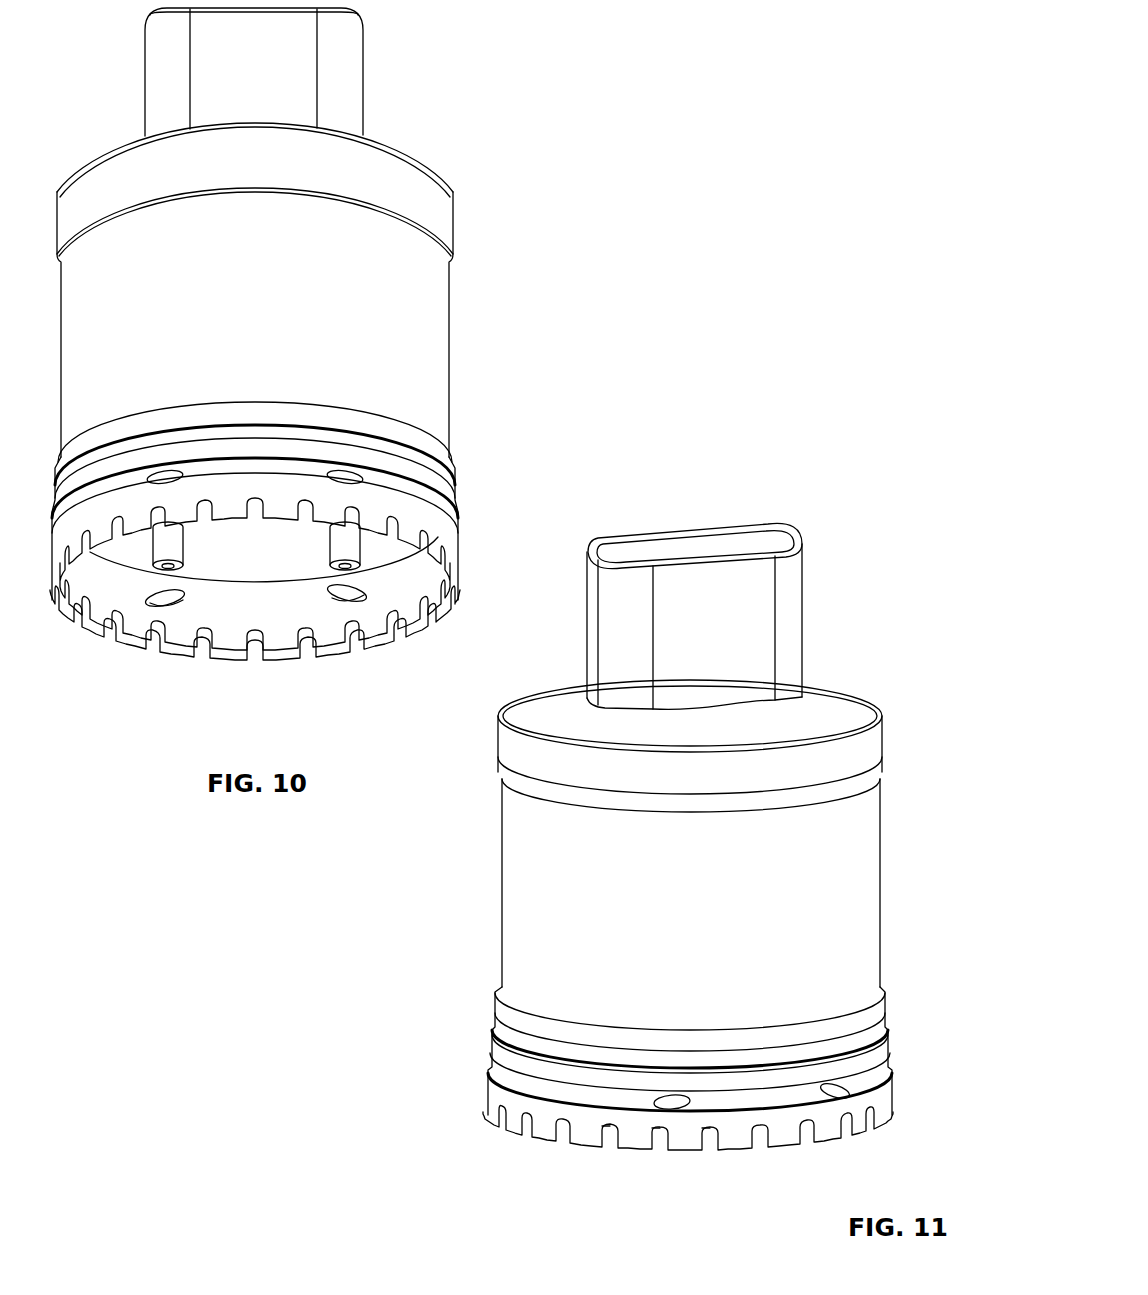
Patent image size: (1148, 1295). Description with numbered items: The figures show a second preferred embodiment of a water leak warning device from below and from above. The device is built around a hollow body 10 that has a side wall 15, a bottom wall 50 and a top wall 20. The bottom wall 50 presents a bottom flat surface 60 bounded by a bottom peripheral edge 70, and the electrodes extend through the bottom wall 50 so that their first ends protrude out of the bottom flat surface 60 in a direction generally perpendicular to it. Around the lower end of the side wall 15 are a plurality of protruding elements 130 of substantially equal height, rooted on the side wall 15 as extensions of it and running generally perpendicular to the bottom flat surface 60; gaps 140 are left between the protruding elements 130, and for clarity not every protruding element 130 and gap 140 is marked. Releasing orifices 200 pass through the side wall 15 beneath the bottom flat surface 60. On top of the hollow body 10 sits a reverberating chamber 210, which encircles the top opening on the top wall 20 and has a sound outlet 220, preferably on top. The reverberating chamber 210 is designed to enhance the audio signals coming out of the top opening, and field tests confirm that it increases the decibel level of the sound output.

In FIG. 10, the hollow body 10 is at (498, 70).
In FIG. 11, the hollow body 10 is at (846, 492).
In FIG. 10, the side wall 15 is at (332, 343).
In FIG. 11, the side wall 15 is at (813, 903).
In FIG. 11, the top wall 20 is at (810, 715).
In FIG. 10, the bottom wall 50 is at (300, 560).
In FIG. 10, the bottom flat surface 60 is at (300, 560).
In FIG. 10, the bottom peripheral edge 70 is at (255, 590).
In FIG. 10, the protruding elements 130 is at (178, 638).
In FIG. 11, the protruding elements 130 is at (630, 1140).
In FIG. 10, the gaps 140 is at (305, 636).
In FIG. 11, the gaps 140 is at (567, 1133).
In FIG. 10, the releasing orifices 200 is at (375, 478).
In FIG. 11, the releasing orifices 200 is at (690, 1100).
In FIG. 10, the reverberating chamber 210 is at (245, 80).
In FIG. 11, the reverberating chamber 210 is at (738, 638).
In FIG. 11, the sound outlet 220 is at (695, 548).